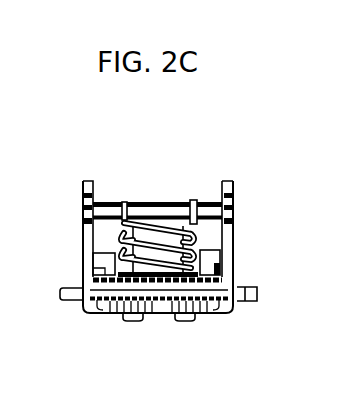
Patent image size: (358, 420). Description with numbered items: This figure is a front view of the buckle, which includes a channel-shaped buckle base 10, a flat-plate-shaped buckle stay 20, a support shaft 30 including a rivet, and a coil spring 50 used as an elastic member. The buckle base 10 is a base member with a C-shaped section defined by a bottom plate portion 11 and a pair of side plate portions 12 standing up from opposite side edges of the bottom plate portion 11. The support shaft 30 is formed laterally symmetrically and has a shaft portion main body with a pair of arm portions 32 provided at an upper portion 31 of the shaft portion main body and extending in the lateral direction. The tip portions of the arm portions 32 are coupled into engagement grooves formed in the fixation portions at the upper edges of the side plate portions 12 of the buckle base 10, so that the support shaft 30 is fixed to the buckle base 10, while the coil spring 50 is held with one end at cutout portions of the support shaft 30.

The buckle base 10 is at (78, 183).
The bottom plate portion 11 is at (158, 307).
The side plate portion 12 is at (82, 244).
The buckle stay 20 is at (258, 295).
The support shaft 30 is at (159, 201).
The upper portion 31 is at (142, 203).
The arm portion 32 is at (101, 196).
The coil spring 50 is at (192, 240).